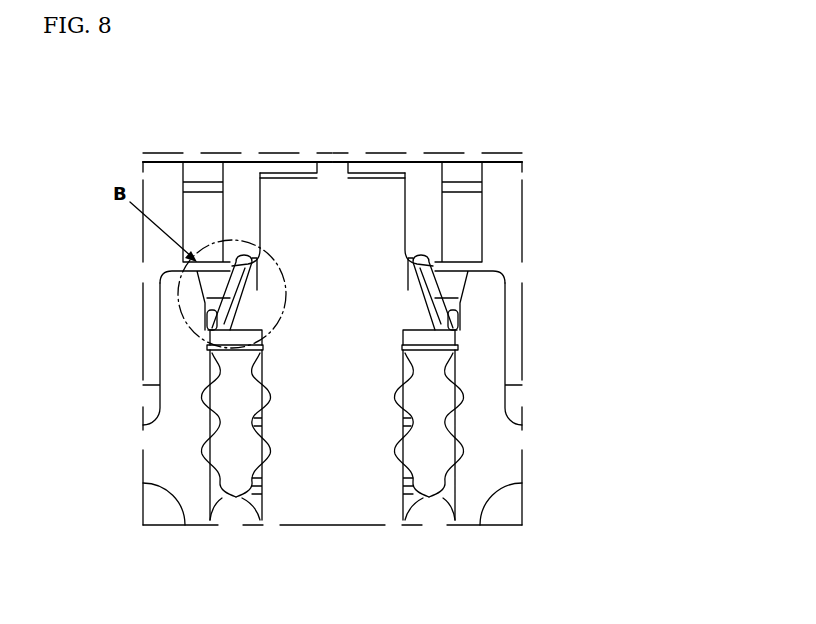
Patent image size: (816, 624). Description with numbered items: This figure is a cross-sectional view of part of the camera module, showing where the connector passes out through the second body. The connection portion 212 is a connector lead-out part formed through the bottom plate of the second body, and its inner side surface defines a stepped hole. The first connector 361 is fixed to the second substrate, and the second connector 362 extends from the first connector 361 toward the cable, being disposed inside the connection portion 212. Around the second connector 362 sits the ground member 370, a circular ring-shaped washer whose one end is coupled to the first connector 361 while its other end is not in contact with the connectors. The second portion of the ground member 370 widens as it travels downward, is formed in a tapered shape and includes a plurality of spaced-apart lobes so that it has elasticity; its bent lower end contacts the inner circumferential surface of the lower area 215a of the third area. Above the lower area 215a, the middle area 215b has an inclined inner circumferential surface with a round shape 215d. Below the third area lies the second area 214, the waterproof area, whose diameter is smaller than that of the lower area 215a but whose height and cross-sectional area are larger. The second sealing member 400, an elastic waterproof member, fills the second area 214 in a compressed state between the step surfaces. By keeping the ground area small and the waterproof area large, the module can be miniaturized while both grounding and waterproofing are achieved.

The connection portion 212 is at (462, 425).
The second area 214 is at (455, 362).
The lower area 215a is at (455, 340).
The middle area 215b is at (457, 303).
The round shape 215d is at (472, 283).
The first connector 361 is at (345, 208).
The second connector 362 is at (345, 483).
The ground member 370 is at (437, 293).
The second sealing member 400 is at (440, 440).